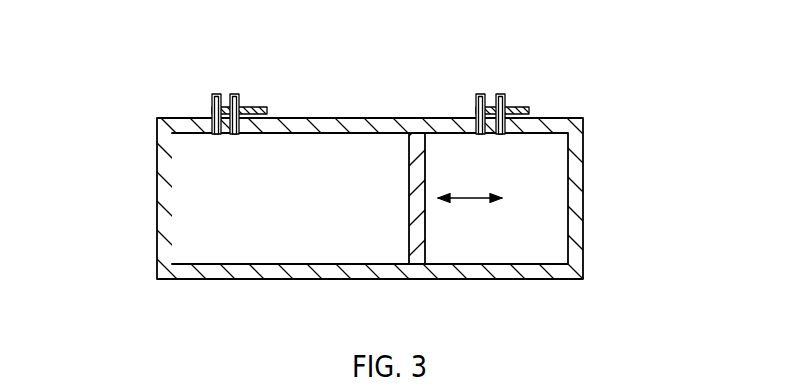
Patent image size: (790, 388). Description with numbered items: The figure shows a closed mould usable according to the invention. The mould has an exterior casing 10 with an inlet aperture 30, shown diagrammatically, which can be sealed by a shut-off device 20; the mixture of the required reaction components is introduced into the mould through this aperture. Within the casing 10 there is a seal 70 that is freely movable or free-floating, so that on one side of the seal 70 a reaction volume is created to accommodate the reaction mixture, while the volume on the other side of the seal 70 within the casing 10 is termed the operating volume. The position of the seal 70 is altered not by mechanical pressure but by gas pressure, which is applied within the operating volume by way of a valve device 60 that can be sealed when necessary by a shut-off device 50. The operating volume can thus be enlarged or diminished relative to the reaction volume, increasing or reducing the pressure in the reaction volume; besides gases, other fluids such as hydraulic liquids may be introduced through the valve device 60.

The exterior casing 10 is at (159, 195).
The shut-off device 20 is at (255, 107).
The inlet aperture 30 is at (212, 95).
The shut-off device 50 is at (518, 105).
The valve device 60 is at (478, 93).
The seal 70 is at (425, 253).